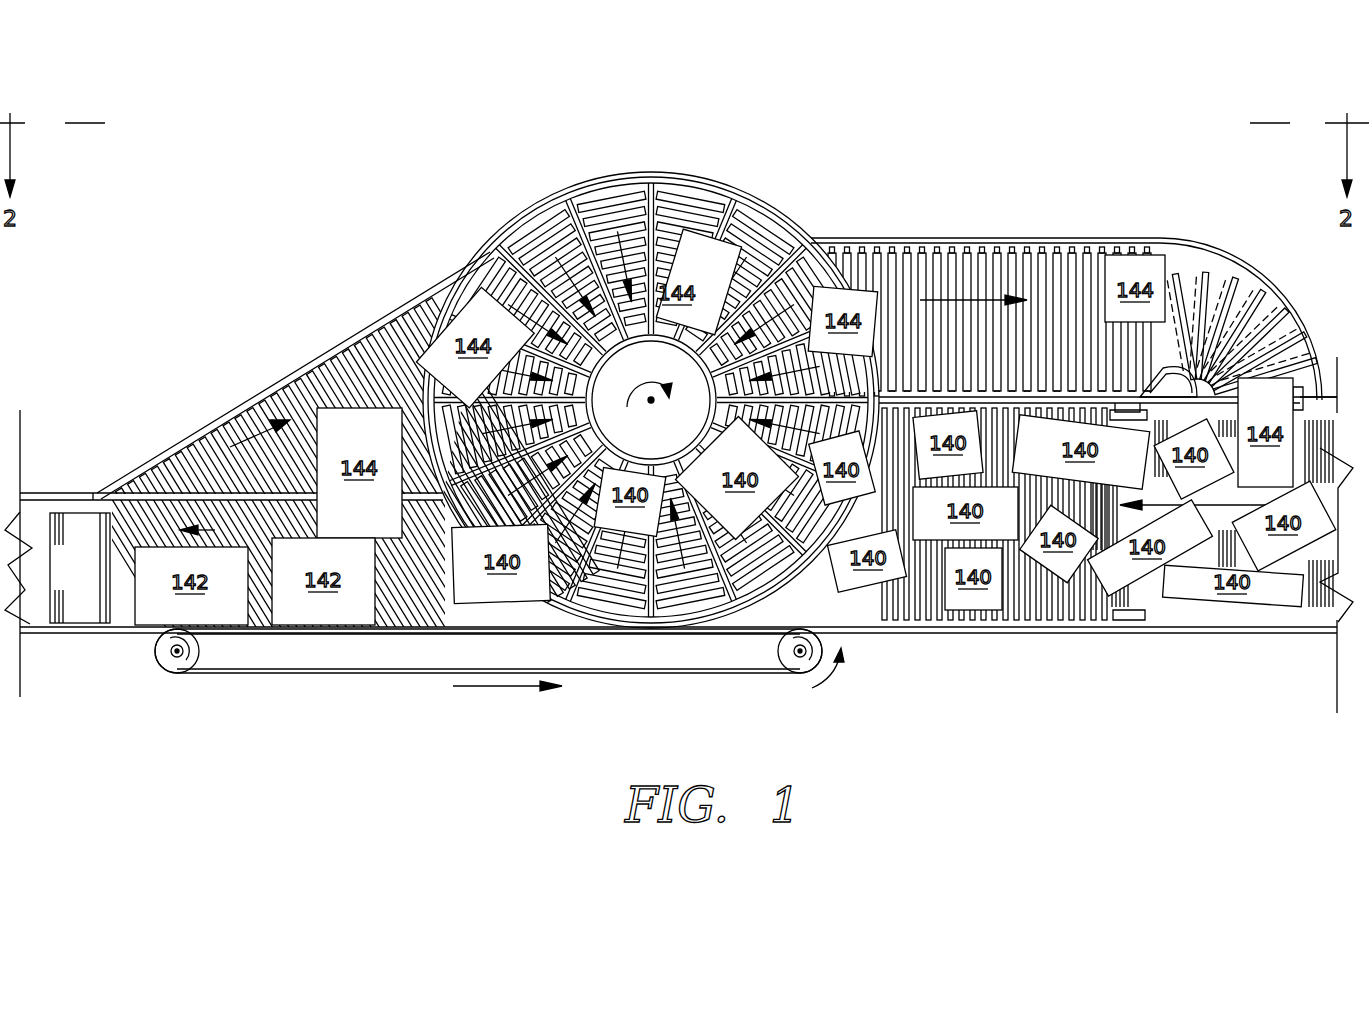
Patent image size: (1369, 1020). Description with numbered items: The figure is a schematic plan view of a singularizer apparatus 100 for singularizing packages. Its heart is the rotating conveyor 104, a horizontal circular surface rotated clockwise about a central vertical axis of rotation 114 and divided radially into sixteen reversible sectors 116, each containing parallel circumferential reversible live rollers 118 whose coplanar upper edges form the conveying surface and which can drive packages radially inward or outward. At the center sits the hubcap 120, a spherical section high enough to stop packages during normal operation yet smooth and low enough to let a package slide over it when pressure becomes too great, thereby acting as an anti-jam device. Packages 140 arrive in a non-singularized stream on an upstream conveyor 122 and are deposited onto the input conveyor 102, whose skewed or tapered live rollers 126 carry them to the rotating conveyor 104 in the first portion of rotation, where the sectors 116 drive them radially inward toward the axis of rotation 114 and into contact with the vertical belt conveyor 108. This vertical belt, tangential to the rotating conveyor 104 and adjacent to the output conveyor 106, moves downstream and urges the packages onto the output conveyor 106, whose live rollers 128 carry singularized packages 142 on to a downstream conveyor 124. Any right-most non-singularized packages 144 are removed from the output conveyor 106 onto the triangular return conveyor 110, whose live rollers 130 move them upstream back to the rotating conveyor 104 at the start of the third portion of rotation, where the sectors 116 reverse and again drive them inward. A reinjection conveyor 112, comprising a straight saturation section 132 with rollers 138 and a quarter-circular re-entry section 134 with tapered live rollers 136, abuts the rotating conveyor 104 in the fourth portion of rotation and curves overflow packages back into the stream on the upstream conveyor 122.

The singularizer apparatus 100 is at (1074, 215).
The input conveyor 102 is at (1040, 645).
The rotating conveyor 104 is at (651, 341).
The output conveyor 106 is at (105, 655).
The vertical belt conveyor 108 is at (270, 685).
The return conveyor 110 is at (345, 504).
The reinjection conveyor 112 is at (1120, 220).
The axis of rotation 114 is at (651, 400).
The reversible sectors 116 is at (778, 213).
The reversible live rollers 118 is at (603, 203).
The hubcap 120 is at (637, 372).
The upstream conveyor 122 is at (1195, 625).
The downstream conveyor 124 is at (44, 485).
The live rollers 126 is at (940, 613).
The live rollers 128 is at (417, 622).
The live rollers 130 is at (267, 410).
The saturation section 132 is at (1030, 237).
The re-entry section 134 is at (1250, 260).
The tapered live rollers 136 is at (1240, 322).
The rollers 138 is at (940, 243).
The packages 140 is at (894, 510).
The singularized packages 142 is at (255, 581).
The non-singularized packages 144 is at (805, 383).